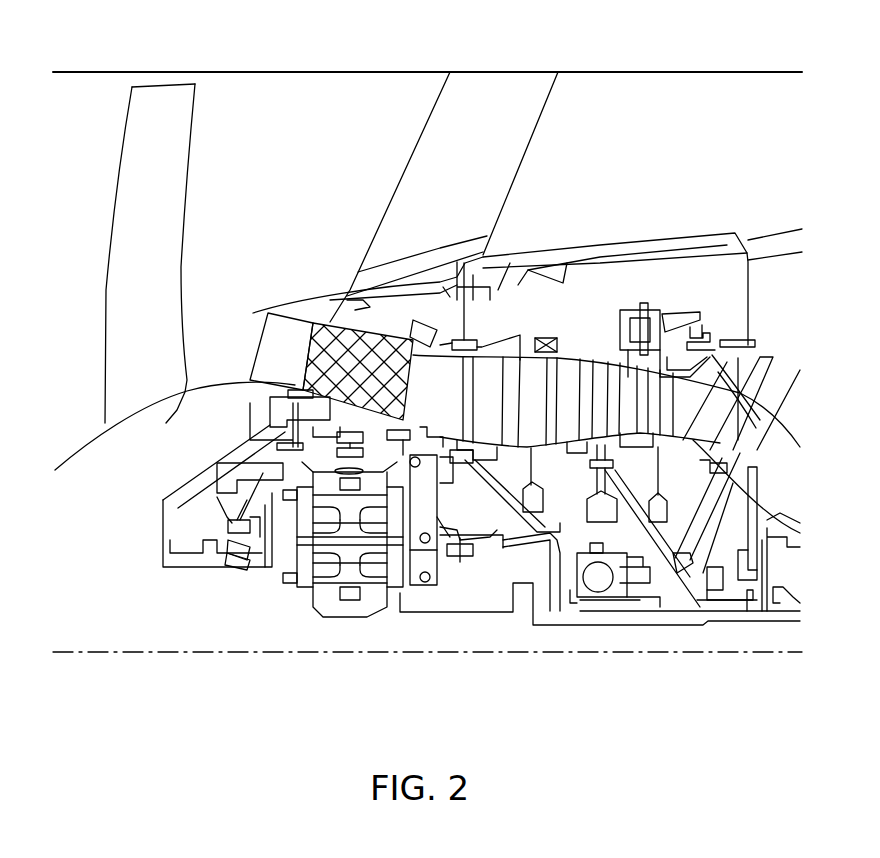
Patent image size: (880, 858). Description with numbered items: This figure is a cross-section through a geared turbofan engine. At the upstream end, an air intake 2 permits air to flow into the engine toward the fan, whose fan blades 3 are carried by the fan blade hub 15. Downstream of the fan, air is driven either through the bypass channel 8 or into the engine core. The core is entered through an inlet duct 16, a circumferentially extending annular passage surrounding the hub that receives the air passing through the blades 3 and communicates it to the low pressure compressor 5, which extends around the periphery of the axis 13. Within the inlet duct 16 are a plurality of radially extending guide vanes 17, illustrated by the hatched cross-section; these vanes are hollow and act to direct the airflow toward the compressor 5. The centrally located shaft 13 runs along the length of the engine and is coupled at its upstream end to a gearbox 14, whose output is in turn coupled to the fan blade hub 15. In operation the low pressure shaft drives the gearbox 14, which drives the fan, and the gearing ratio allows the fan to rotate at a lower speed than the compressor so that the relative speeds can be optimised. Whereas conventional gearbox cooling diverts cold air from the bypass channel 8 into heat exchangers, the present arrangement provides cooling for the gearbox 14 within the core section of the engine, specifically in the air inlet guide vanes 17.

The air intake 2 is at (83, 97).
The fan blades 3 is at (123, 295).
The low pressure compressor 5 is at (510, 393).
The bypass channel 8 is at (355, 95).
The shaft 13 is at (773, 653).
The gearbox 14 is at (367, 600).
The fan blade hub 15 is at (88, 475).
The inlet duct 16 is at (262, 344).
The guide vanes 17 is at (362, 357).